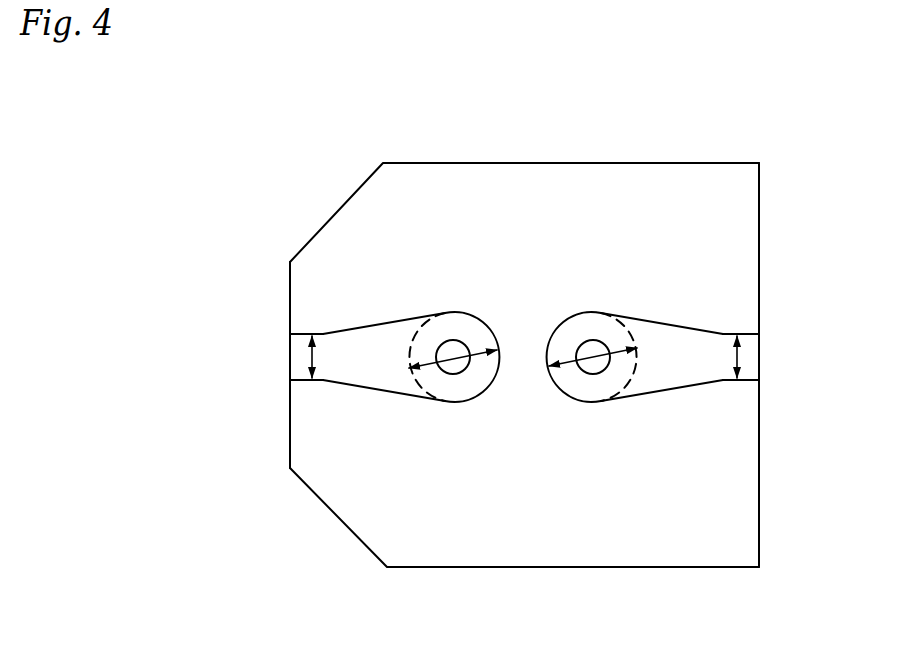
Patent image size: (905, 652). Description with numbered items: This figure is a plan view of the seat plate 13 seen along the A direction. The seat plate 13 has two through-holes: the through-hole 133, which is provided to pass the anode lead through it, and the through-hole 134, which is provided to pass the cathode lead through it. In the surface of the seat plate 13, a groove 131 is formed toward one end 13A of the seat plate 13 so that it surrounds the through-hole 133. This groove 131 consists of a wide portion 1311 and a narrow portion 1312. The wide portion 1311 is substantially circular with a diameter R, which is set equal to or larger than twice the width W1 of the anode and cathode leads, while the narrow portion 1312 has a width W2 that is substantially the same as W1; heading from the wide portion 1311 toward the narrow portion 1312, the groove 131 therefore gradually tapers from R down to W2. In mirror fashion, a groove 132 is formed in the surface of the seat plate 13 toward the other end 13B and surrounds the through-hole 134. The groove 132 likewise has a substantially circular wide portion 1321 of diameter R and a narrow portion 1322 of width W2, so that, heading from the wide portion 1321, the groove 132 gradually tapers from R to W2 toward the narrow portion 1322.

The seat plate 13 is at (538, 178).
The one end of the seat plate 13A is at (290, 417).
The other end of the seat plate 13B is at (760, 415).
The groove 131 is at (357, 327).
The wide portion 1311 is at (434, 325).
The narrow portion 1312 is at (298, 357).
The through-hole 133 is at (452, 340).
The groove 132 is at (698, 326).
The wide portion 1321 is at (618, 329).
The narrow portion 1322 is at (752, 358).
The through-hole 134 is at (590, 341).